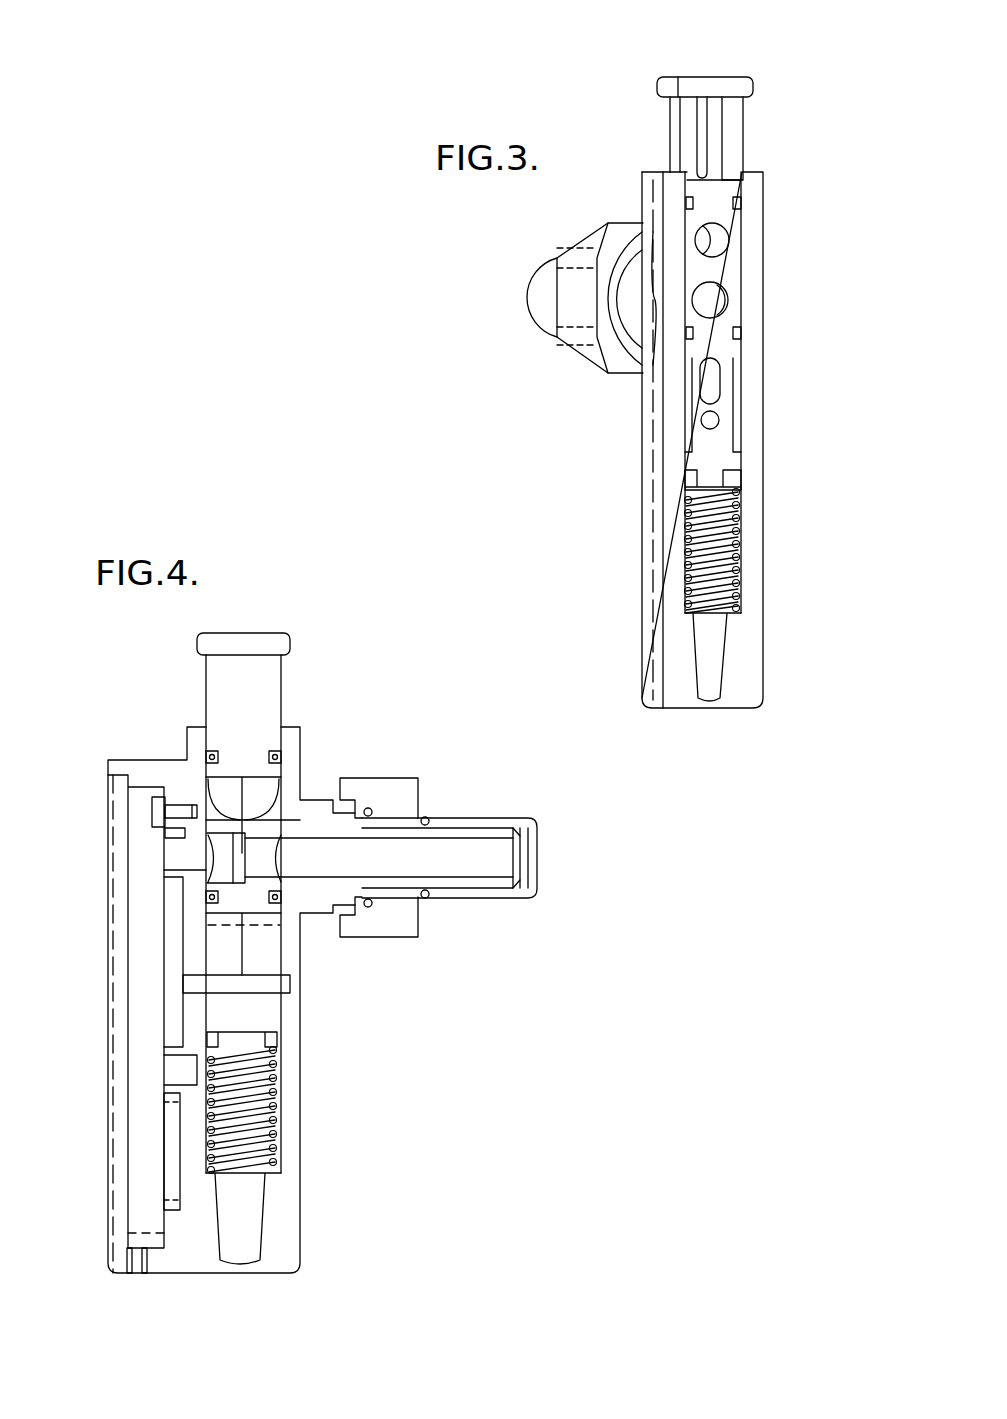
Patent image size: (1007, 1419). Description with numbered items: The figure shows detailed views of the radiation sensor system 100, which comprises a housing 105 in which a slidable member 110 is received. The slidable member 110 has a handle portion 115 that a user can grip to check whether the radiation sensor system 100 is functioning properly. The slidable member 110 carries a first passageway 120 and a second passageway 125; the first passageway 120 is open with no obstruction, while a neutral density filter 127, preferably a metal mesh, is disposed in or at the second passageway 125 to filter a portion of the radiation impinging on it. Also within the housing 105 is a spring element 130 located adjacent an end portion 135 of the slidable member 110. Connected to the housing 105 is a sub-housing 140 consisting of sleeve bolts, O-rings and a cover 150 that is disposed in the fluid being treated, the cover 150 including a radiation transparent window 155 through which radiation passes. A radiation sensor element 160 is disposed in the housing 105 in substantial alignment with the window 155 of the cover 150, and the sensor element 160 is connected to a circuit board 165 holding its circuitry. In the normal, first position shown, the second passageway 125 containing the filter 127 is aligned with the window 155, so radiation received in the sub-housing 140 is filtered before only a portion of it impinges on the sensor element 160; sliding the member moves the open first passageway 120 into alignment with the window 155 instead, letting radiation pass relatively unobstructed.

In FIG. 4, the radiation sensor system 100 is at (560, 944).
In FIG. 3, the housing 105 is at (763, 515).
In FIG. 4, the housing 105 is at (298, 1082).
In FIG. 3, the slidable member 110 is at (742, 112).
In FIG. 3, the handle portion 115 is at (695, 82).
In FIG. 3, the first passageway 120 is at (717, 240).
In FIG. 4, the first passageway 120 is at (257, 793).
In FIG. 3, the second passageway 125 is at (727, 300).
In FIG. 4, the second passageway 125 is at (260, 853).
In FIG. 3, the neutral density filter 127 is at (718, 282).
In FIG. 4, the neutral density filter 127 is at (237, 832).
In FIG. 3, the spring element 130 is at (713, 555).
In FIG. 4, the spring element 130 is at (250, 1122).
In FIG. 3, the end portion 135 is at (710, 478).
In FIG. 4, the end portion 135 is at (248, 1038).
In FIG. 4, the sub-housing 140 is at (375, 776).
In FIG. 4, the cover 150 is at (483, 827).
In FIG. 4, the radiation transparent window 155 is at (538, 858).
In FIG. 4, the radiation sensor element 160 is at (178, 855).
In FIG. 4, the circuit board 165 is at (122, 918).